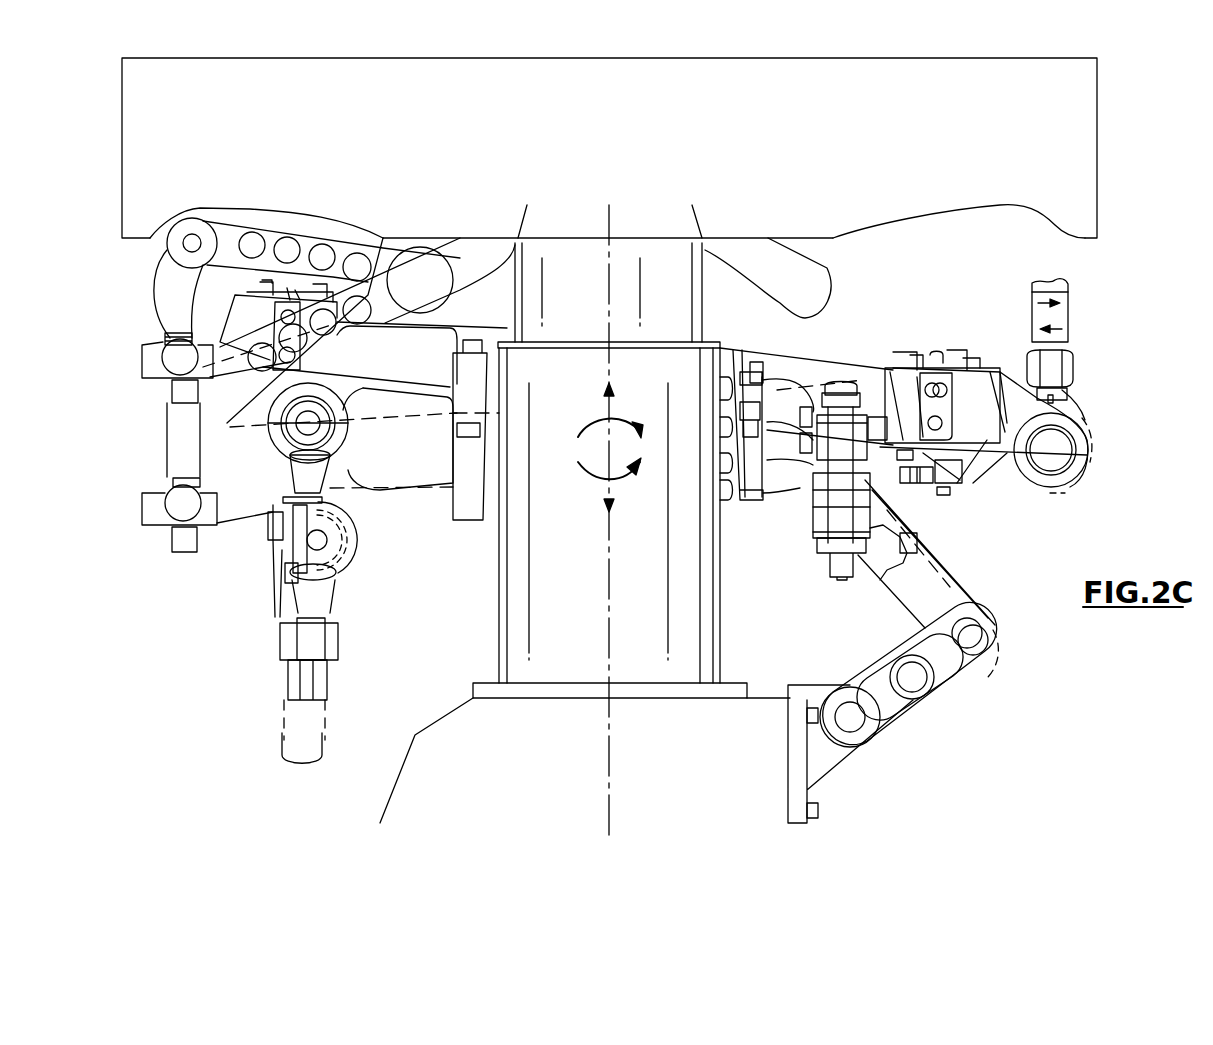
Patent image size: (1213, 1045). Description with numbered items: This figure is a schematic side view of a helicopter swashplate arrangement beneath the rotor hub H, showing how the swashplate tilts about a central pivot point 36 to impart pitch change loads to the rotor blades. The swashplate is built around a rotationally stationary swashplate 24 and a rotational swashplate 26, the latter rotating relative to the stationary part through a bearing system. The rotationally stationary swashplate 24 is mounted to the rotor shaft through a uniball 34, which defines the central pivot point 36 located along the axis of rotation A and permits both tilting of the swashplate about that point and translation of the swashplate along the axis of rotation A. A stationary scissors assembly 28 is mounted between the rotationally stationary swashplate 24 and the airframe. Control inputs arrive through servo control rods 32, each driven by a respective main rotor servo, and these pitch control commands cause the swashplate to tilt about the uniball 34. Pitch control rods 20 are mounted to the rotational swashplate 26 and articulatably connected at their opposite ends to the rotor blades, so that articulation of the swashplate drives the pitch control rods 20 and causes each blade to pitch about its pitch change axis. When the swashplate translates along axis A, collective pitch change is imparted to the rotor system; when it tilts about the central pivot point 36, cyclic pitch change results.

The rotor hub H is at (602, 80).
The axis of rotation A is at (609, 818).
The pitch control rod 20 is at (1056, 330).
The rotationally stationary swashplate 24 is at (890, 488).
The rotational swashplate 26 is at (987, 443).
The stationary scissors assembly 28 is at (988, 692).
The servo control rod 32 is at (302, 725).
The uniball 34 is at (730, 367).
The central pivot point 36 is at (607, 445).